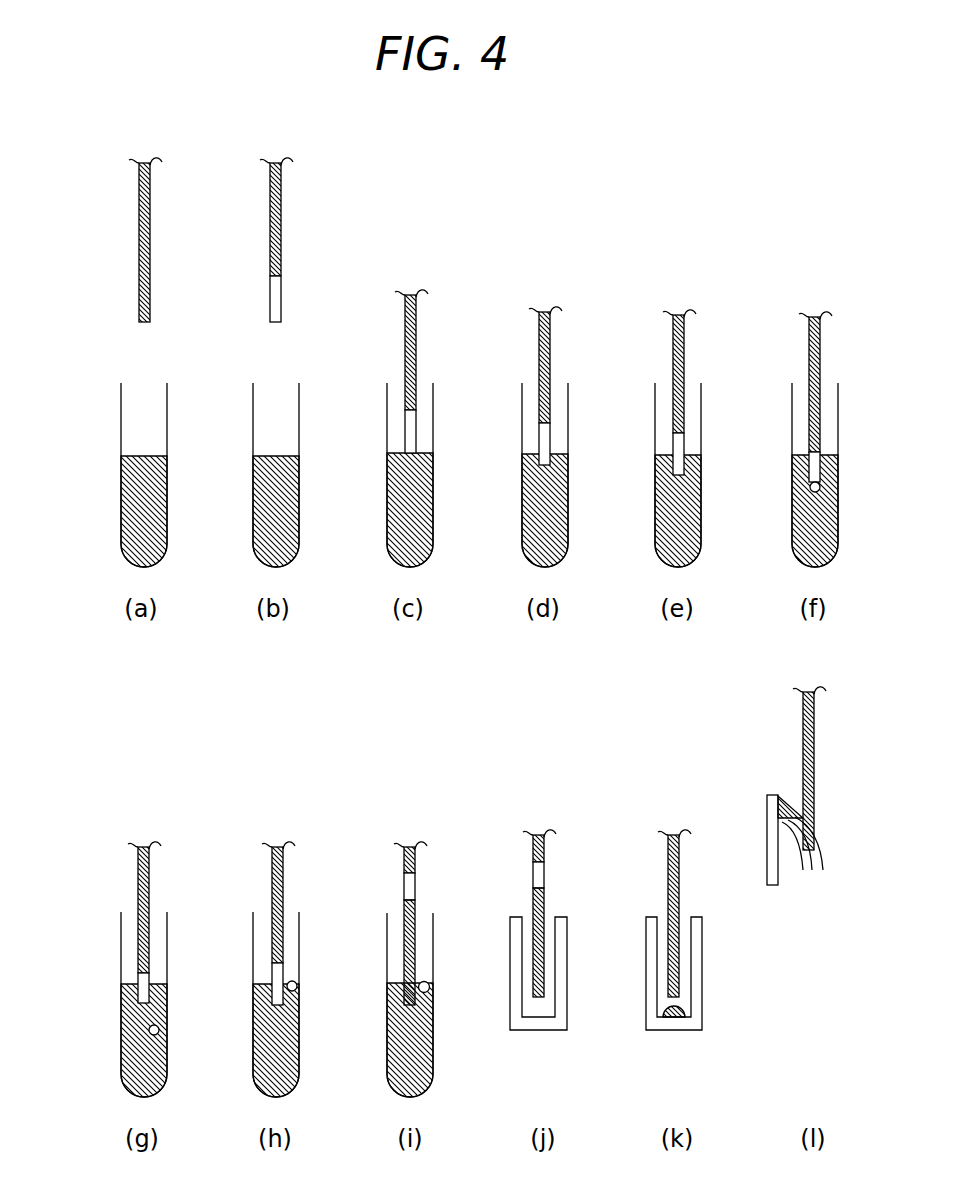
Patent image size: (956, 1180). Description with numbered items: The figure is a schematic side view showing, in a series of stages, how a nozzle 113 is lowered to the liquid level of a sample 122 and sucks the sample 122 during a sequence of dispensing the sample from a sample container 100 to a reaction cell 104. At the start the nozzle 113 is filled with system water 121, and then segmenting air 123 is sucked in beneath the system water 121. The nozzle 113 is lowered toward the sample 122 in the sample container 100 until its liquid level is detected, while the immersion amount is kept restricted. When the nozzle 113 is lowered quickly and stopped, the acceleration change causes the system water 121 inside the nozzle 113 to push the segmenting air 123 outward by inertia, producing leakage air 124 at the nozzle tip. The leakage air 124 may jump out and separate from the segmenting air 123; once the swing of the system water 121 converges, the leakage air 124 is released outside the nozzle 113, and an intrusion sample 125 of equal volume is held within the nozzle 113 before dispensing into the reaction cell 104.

The sample container 100 is at (121, 432).
The reaction cell 104 is at (567, 972).
The nozzle 113 is at (139, 168).
The system water 121 is at (139, 226).
The sample 122 is at (121, 520).
The segmenting air 123 is at (270, 300).
The leakage air 124 is at (812, 488).
The intrusion sample 125 is at (265, 1008).